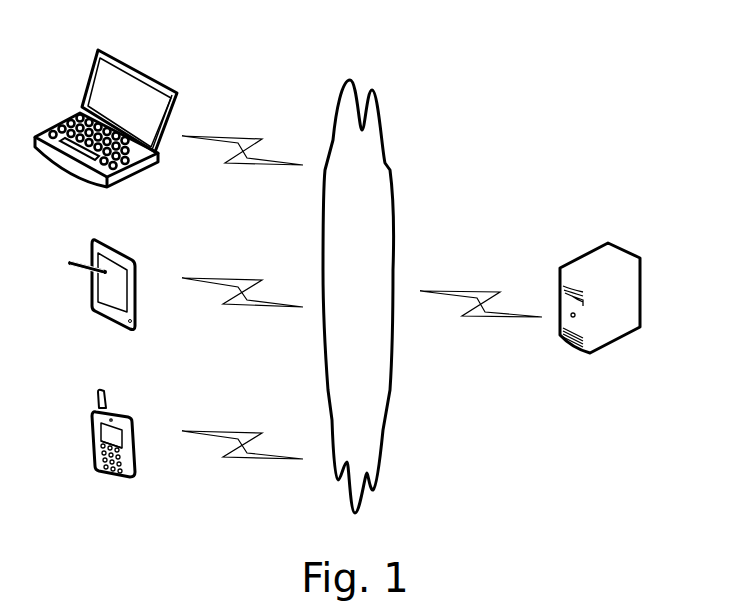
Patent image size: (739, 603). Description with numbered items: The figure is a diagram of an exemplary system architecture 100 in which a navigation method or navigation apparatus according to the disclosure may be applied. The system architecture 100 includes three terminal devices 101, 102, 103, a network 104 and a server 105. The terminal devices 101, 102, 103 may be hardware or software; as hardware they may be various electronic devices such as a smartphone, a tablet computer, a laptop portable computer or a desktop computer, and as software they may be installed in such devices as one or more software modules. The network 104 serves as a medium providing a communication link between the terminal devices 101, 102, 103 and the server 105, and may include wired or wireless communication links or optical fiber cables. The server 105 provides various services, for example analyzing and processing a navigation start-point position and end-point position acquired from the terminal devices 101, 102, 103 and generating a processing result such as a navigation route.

The system architecture 100 is at (572, 25).
The terminal device 101 is at (113, 452).
The terminal device 102 is at (102, 302).
The terminal device 103 is at (106, 134).
The network 104 is at (358, 296).
The server 105 is at (600, 315).